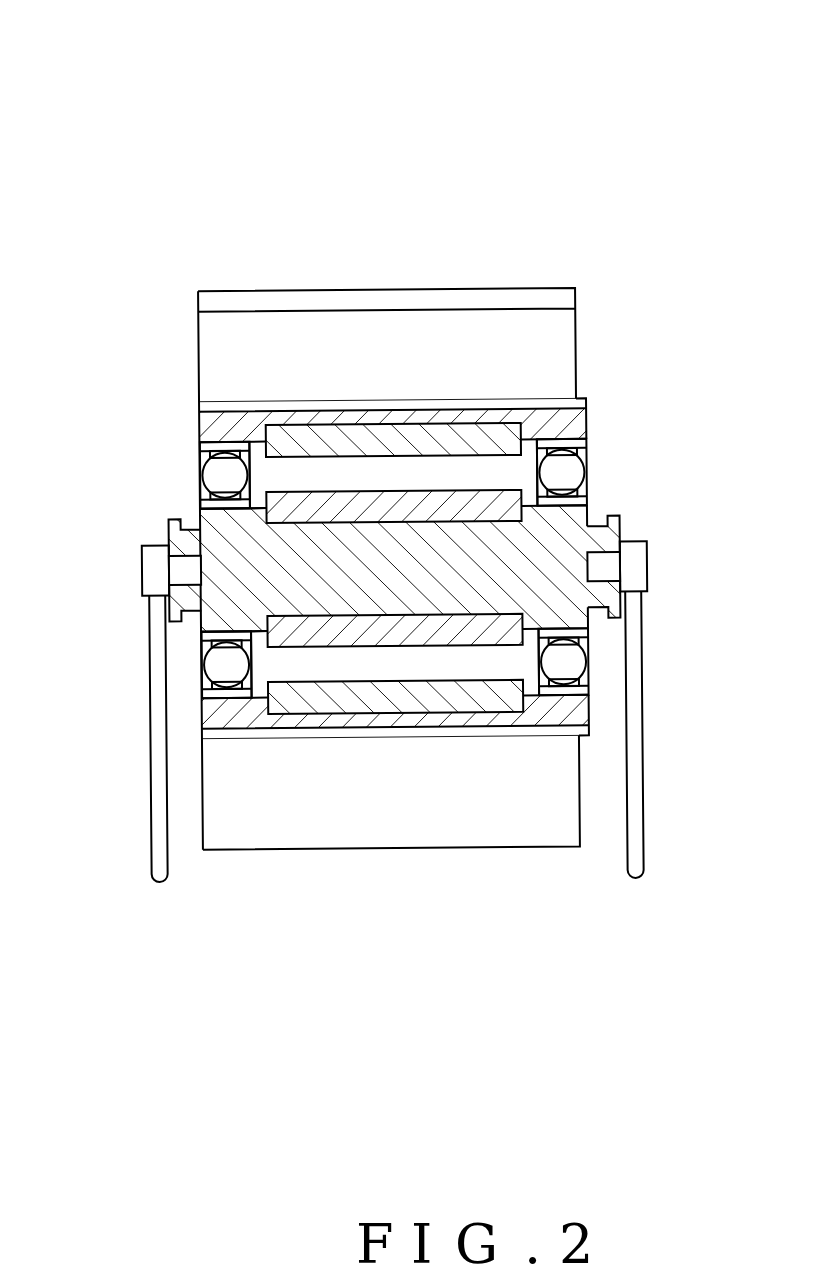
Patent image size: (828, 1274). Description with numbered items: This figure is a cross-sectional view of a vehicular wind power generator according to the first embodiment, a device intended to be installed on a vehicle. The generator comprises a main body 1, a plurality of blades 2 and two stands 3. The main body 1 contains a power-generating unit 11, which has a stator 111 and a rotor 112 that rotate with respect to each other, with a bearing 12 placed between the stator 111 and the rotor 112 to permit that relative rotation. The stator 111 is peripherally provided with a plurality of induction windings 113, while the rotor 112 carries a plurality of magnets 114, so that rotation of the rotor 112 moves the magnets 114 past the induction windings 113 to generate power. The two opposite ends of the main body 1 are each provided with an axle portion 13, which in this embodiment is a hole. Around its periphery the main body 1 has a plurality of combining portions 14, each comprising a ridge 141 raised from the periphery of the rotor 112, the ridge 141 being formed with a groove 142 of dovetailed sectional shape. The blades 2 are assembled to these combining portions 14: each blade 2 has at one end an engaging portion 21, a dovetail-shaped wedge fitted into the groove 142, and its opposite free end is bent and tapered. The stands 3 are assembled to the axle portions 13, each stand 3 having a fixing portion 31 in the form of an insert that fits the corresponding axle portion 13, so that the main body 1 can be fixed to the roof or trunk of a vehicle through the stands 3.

The main body 1 is at (173, 407).
The power-generating unit 11 is at (262, 115).
The stator 111 is at (240, 532).
The rotor 112 is at (250, 443).
The induction windings 113 is at (290, 545).
The magnets 114 is at (300, 505).
The bearing 12 is at (218, 473).
The axle portion 13 is at (170, 553).
The combining portion 14 is at (414, 570).
The ridge 141 is at (579, 400).
The groove 142 is at (502, 408).
The blade 2 is at (407, 352).
The engaging portion 21 is at (360, 428).
The stand 3 is at (157, 693).
The fixing portion 31 is at (182, 568).